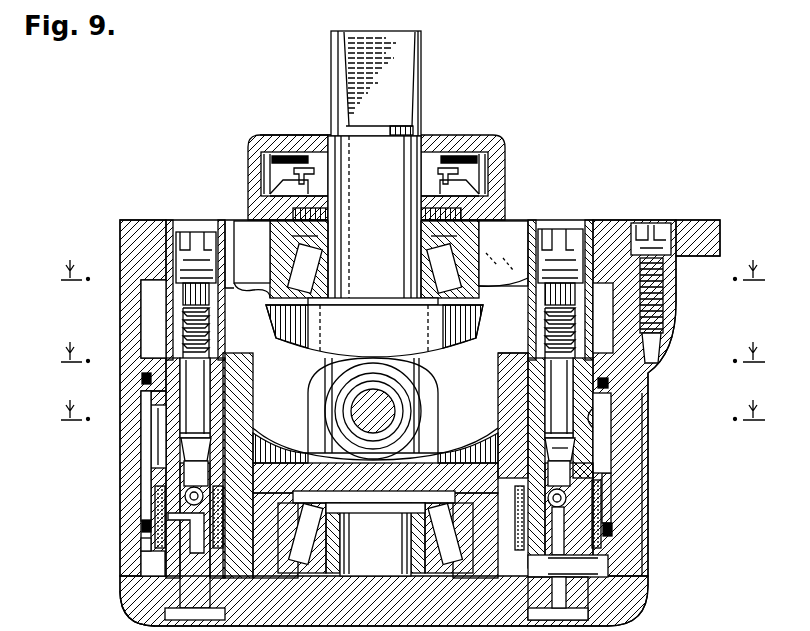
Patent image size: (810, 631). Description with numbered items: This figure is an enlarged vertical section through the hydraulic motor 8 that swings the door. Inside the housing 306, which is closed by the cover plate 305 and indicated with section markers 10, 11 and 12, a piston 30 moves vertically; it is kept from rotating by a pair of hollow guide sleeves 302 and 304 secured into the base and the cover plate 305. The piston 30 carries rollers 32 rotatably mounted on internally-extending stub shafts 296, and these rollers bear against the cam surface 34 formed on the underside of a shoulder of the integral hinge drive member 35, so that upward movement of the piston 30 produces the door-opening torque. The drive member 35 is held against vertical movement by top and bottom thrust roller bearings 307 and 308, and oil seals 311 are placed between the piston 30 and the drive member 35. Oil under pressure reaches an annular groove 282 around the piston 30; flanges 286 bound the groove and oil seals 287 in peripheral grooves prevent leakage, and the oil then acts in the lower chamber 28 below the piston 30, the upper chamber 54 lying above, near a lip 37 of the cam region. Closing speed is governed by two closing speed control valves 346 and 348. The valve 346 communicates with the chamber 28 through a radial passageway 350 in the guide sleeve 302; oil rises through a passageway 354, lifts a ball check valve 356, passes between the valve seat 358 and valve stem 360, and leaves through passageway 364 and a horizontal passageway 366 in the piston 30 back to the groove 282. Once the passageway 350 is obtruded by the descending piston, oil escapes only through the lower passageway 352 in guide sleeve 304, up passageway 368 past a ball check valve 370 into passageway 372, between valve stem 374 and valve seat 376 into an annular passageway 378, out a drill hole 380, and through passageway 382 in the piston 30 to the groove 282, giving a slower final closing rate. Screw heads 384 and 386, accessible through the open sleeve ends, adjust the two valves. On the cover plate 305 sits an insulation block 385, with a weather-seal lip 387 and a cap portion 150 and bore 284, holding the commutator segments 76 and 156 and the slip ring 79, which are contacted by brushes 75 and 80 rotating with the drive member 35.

The hydraulic motor 8 is at (100, 190).
The section line 10 is at (413, 414).
The section line 11 is at (413, 274).
The section line 12 is at (413, 356).
The chamber 28 is at (128, 555).
The piston 30 is at (500, 338).
The rollers 32 is at (330, 370).
The cam surface 34 is at (268, 326).
The hinge drive member 35 is at (372, 47).
The flange lip 37 is at (283, 434).
The upper chamber 54 is at (252, 274).
The brush 75 is at (497, 151).
The commutator segment 76 is at (497, 162).
The slip ring 79 is at (306, 165).
The brush 80 is at (300, 162).
The cap 150 is at (448, 128).
The commutator segment 156 is at (243, 151).
The annular groove 282 is at (150, 457).
The bore 284 is at (620, 322).
The flanges 286 is at (140, 352).
The oil seals 287 is at (604, 523).
The stub shafts 296 is at (368, 390).
The guide sleeve 302 is at (215, 576).
The guide sleeve 304 is at (576, 575).
The cover plate 305 is at (690, 228).
The housing 306 is at (117, 586).
The top thrust roller bearing 307 is at (474, 259).
The bottom thrust roller bearing 308 is at (428, 568).
The oil seals 311 is at (393, 533).
The closing speed control valve 346 is at (156, 293).
The closing speed control valve 348 is at (593, 303).
The passageway 350 is at (190, 548).
The passageway 352 is at (586, 556).
The passageway 354 is at (239, 465).
The ball check valve 356 is at (375, 478).
The valve seat 358 is at (186, 450).
The valve stem 360 is at (330, 373).
The passageway 364 is at (145, 385).
The horizontal passageway 366 is at (158, 405).
The passageway 368 is at (585, 516).
The ball check valve 370 is at (500, 477).
The passageway 372 is at (556, 477).
The valve stem 374 is at (548, 373).
The valve seat 376 is at (562, 445).
The annular passageway 378 is at (540, 395).
The drill hole 380 is at (592, 391).
The passageway 382 is at (582, 405).
The screw head 384 is at (212, 231).
The insulation block 385 is at (243, 191).
The screw head 386 is at (503, 262).
The cap top 387 is at (300, 130).